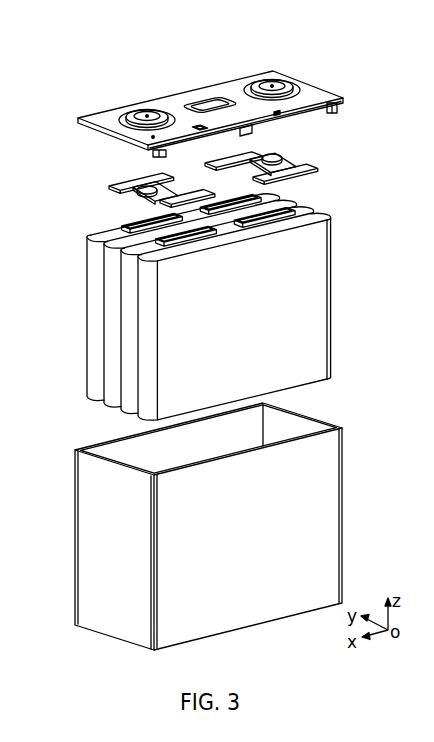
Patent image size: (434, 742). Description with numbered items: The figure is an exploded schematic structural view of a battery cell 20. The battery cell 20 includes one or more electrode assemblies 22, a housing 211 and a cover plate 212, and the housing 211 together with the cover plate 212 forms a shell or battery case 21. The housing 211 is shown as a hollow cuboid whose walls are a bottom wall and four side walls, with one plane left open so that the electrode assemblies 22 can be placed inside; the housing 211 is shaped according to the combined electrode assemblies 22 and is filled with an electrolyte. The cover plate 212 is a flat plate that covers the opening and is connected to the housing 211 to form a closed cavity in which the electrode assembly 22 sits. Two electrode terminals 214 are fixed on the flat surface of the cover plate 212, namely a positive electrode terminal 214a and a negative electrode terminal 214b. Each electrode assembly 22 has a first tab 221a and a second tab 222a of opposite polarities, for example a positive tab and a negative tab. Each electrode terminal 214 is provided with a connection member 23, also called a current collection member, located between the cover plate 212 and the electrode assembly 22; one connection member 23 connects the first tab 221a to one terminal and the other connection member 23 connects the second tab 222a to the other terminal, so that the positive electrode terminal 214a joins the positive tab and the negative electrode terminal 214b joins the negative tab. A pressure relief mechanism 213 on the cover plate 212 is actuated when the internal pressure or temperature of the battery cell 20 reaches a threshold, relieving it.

The battery cell 20 is at (95, 37).
The battery case 21 is at (75, 450).
The housing 211 is at (308, 508).
The cover plate 212 is at (333, 106).
The pressure relief mechanism 213 is at (238, 108).
The electrode terminals 214 is at (245, 38).
The positive electrode terminal 214a is at (146, 119).
The negative electrode terminal 214b is at (271, 89).
The electrode assembly 22 is at (297, 307).
The first tab 221a is at (88, 238).
The second tab 222a is at (333, 214).
The connection member 23 is at (110, 190).